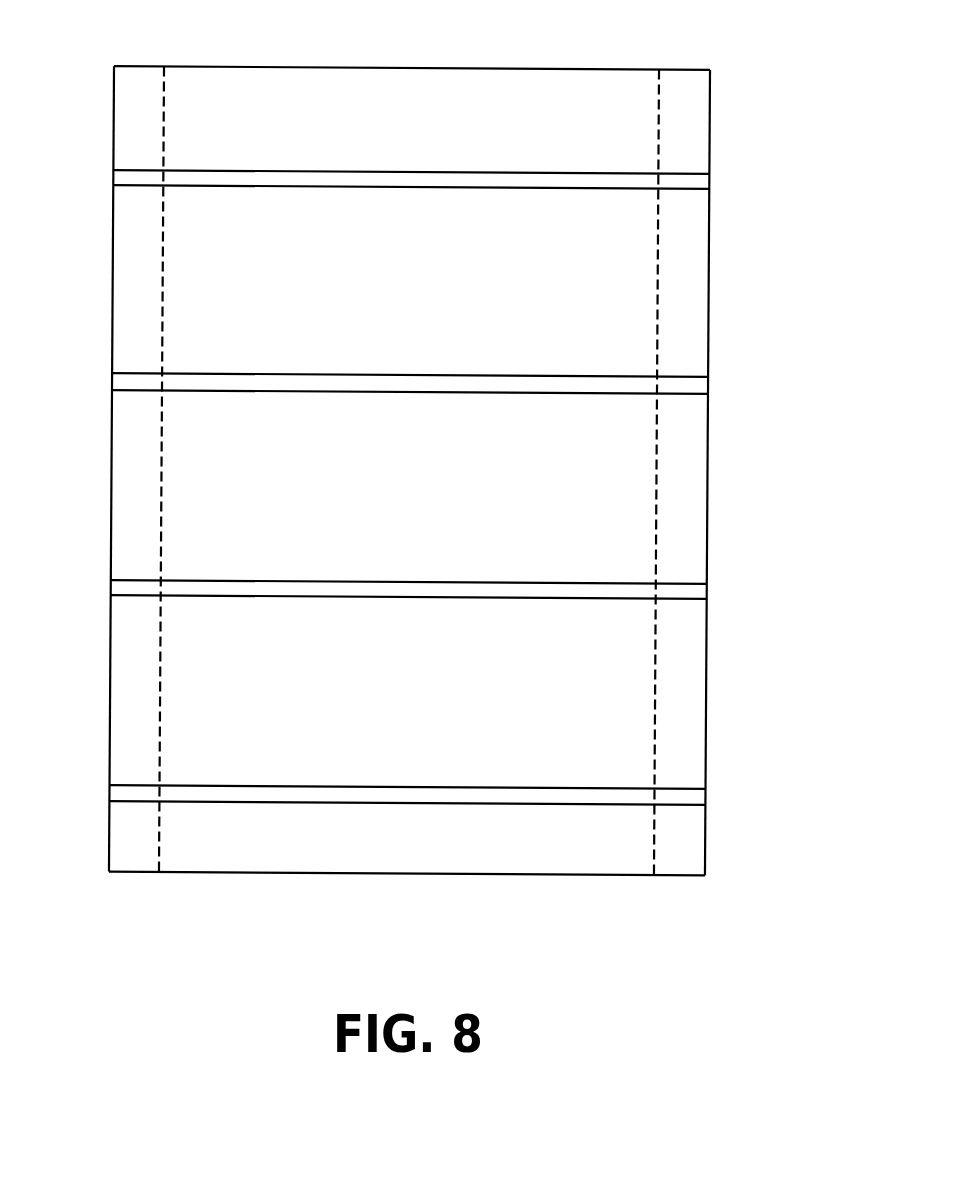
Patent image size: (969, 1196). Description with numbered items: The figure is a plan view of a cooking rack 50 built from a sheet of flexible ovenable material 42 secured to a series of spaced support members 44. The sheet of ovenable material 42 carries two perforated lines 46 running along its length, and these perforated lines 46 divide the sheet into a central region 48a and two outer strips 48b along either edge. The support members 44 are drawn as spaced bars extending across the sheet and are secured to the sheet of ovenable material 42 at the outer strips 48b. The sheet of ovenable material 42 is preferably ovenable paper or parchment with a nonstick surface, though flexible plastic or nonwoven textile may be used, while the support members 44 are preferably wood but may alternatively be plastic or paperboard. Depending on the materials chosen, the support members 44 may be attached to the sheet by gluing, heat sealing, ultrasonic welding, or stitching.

The sheet of flexible ovenable material 42 is at (390, 88).
The support members 44 is at (409, 188).
The perforated lines 46 is at (164, 107).
The central region 48a is at (393, 847).
The outer strips 48b is at (122, 843).
The cooking rack 50 is at (783, 105).